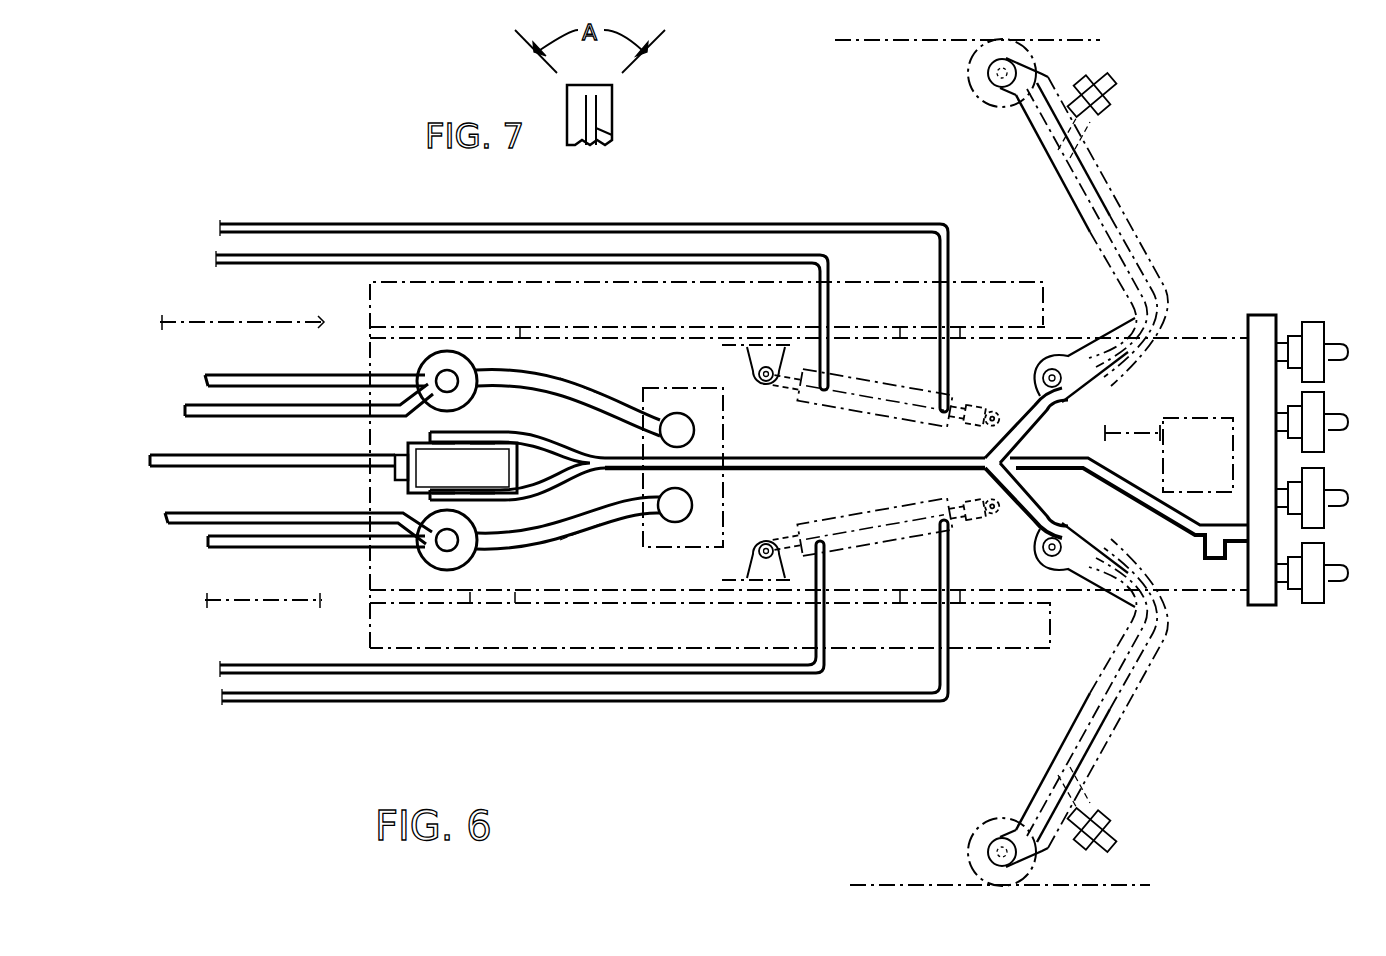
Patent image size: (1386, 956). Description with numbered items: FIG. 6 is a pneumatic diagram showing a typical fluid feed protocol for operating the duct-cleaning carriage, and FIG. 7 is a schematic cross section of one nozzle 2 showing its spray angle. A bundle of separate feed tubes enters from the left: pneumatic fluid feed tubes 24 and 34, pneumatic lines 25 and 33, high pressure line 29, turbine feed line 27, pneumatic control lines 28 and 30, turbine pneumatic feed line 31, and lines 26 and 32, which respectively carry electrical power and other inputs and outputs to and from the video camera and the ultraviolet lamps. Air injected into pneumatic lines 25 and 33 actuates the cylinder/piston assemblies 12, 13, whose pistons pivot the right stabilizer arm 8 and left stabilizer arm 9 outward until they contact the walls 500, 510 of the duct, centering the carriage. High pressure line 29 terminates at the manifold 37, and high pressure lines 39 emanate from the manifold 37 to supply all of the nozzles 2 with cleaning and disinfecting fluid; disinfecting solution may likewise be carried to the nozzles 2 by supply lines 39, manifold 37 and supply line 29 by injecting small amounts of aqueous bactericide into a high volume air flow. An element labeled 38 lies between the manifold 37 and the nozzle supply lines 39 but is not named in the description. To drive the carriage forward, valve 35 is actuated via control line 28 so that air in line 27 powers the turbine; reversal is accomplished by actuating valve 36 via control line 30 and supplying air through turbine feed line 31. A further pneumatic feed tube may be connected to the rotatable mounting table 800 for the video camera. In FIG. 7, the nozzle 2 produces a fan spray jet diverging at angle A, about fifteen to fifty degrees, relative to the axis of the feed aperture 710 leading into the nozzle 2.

In FIG. 7, the nozzle 2 is at (612, 100).
In FIG. 6, the nozzle 2 is at (1338, 432).
In FIG. 7, the feed aperture 710 is at (608, 133).
In FIG. 6, the right stabilizer arm 8 is at (1135, 668).
In FIG. 6, the left stabilizer arm 9 is at (1130, 220).
In FIG. 6, the cylinder/piston assembly 12 is at (905, 390).
In FIG. 6, the cylinder/piston assembly 13 is at (845, 525).
In FIG. 6, the pneumatic fluid feed tube 24 is at (226, 222).
In FIG. 6, the pneumatic line 25 is at (218, 256).
In FIG. 6, the video camera line 26 is at (170, 322).
In FIG. 6, the turbine feed line 27 is at (212, 374).
In FIG. 6, the pneumatic control line 28 is at (190, 405).
In FIG. 6, the high pressure line 29 is at (154, 456).
In FIG. 6, the pneumatic control line 30 is at (168, 514).
In FIG. 6, the turbine pneumatic feed line 31 is at (210, 543).
In FIG. 6, the ultraviolet lamp line 32 is at (208, 600).
In FIG. 6, the pneumatic line 33 is at (220, 668).
In FIG. 6, the pneumatic fluid feed tube 34 is at (222, 698).
In FIG. 6, the valve 35 is at (430, 372).
In FIG. 6, the valve 36 is at (435, 555).
In FIG. 6, the manifold 37 is at (478, 482).
In FIG. 6, the ball joints 38 is at (675, 388).
In FIG. 6, the high pressure lines 39 is at (768, 473).
In FIG. 6, the duct wall 500 is at (916, 884).
In FIG. 6, the duct wall 510 is at (914, 41).
In FIG. 6, the rotatable mounting table for the video camera 800 is at (1202, 418).